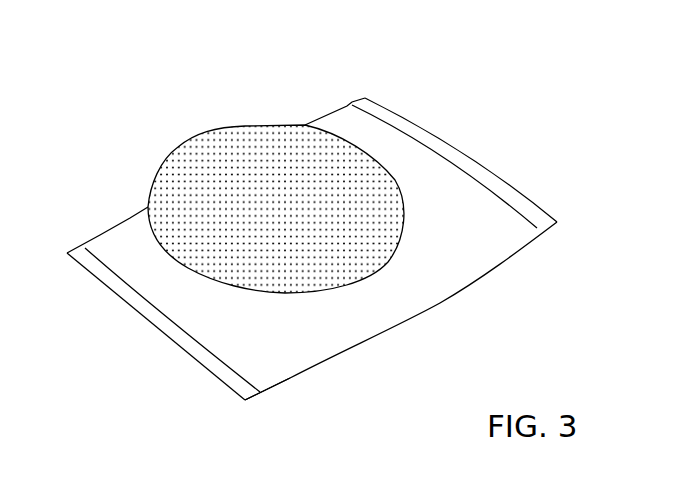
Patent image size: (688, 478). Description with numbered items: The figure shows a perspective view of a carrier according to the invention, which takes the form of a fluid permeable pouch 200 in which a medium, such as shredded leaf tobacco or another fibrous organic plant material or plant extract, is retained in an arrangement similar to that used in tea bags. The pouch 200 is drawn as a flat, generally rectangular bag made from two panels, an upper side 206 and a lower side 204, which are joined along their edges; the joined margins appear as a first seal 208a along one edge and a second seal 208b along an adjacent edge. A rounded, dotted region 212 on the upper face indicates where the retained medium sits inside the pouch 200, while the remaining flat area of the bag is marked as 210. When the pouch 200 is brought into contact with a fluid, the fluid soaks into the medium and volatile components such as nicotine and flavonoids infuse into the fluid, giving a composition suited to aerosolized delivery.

The pouch 200 is at (217, 109).
The second sheet 204 is at (464, 316).
The first sheet 206 is at (313, 98).
The first seal 208a is at (145, 308).
The second seal 208b is at (476, 144).
The pouch interior 210 is at (283, 357).
The absorbent material 212 is at (206, 198).